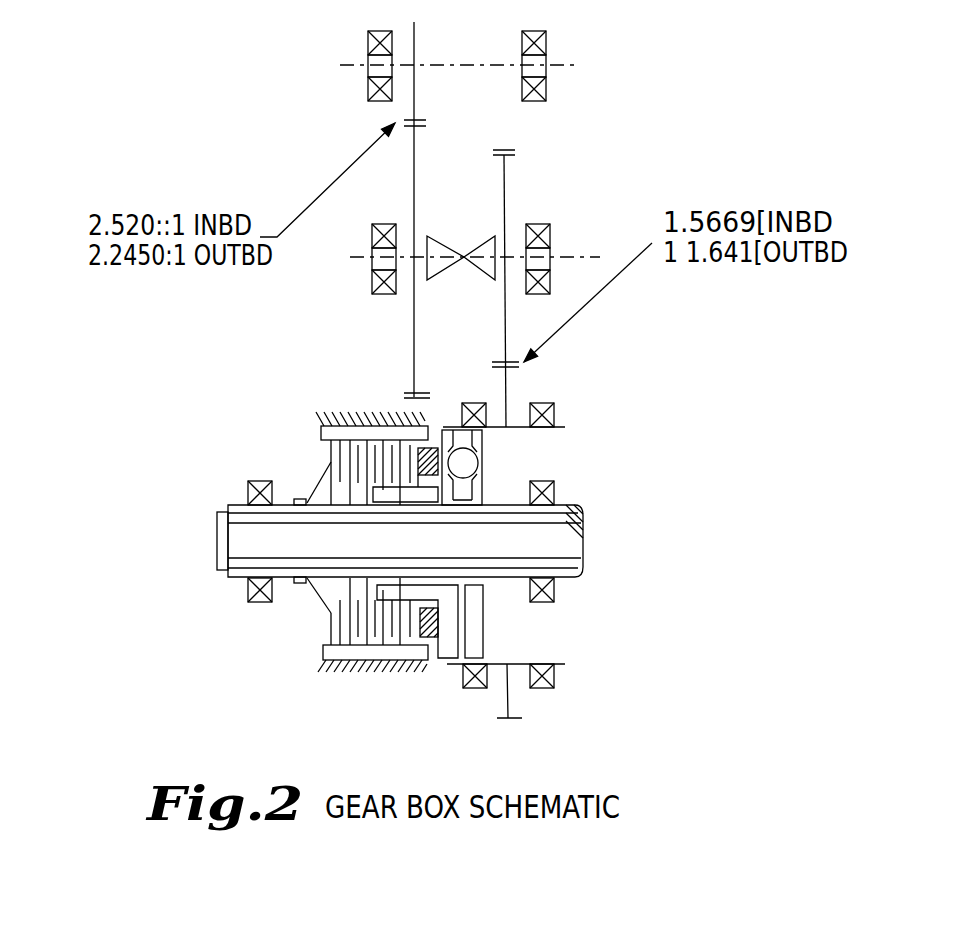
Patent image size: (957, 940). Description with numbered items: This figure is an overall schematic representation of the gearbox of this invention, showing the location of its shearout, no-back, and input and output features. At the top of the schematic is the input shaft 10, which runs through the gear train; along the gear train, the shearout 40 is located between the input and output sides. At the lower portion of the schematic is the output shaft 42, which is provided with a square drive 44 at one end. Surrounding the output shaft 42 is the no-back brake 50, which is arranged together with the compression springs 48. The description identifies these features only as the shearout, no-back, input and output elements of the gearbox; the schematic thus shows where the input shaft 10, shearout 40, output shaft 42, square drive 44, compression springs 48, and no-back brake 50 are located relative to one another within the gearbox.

The input shaft 10 is at (379, 210).
The shearout 40 is at (497, 240).
The output shaft 42 is at (467, 541).
The square drive 44 is at (217, 541).
The compression springs 48 is at (436, 655).
The no-back brake 50 is at (331, 462).